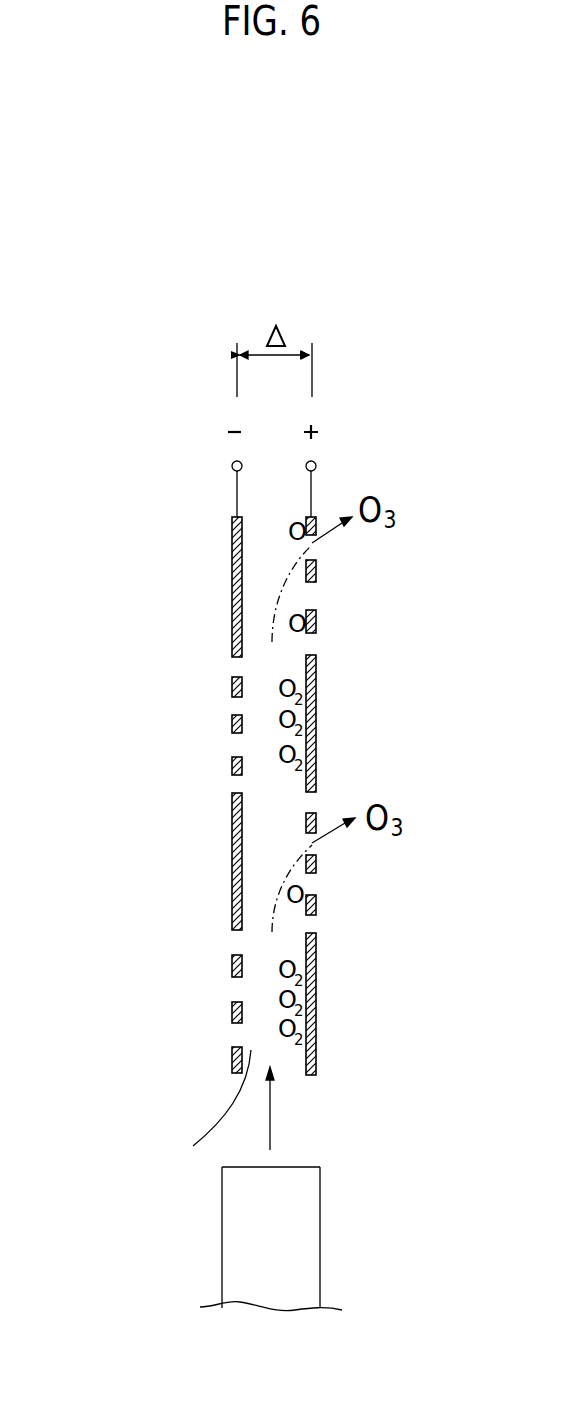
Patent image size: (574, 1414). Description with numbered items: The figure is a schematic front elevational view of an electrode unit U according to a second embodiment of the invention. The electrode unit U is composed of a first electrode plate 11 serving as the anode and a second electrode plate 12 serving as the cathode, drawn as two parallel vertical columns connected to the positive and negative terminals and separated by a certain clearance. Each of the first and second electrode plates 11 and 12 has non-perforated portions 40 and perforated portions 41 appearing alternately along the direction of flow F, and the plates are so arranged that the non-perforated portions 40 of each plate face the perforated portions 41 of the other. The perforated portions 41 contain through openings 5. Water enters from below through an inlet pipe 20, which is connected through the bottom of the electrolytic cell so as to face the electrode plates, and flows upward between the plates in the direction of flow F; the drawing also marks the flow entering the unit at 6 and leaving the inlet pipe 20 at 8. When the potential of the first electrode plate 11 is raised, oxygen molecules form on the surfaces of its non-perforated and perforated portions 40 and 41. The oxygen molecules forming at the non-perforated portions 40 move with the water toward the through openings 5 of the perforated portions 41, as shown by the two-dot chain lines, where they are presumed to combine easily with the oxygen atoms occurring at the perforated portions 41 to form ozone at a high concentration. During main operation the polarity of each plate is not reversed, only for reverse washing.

The non-perforated portion 40 is at (355, 996).
The perforated portion 41 is at (362, 553).
The through opening 5 is at (188, 937).
The second electrode plate 12 is at (232, 1070).
The first electrode plate 11 is at (345, 1097).
The gas flow path 6 is at (212, 1113).
The outlet 8 is at (360, 1160).
The inlet pipe 20 is at (358, 1238).
The direction of flow F is at (294, 1121).
The electrode unit U is at (63, 542).